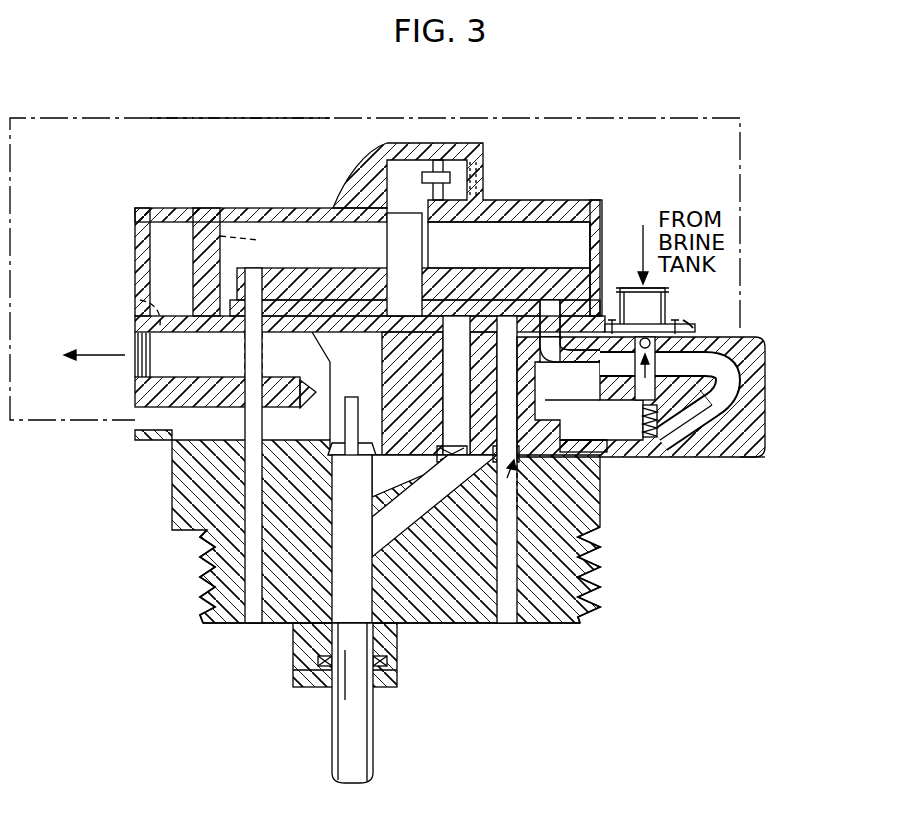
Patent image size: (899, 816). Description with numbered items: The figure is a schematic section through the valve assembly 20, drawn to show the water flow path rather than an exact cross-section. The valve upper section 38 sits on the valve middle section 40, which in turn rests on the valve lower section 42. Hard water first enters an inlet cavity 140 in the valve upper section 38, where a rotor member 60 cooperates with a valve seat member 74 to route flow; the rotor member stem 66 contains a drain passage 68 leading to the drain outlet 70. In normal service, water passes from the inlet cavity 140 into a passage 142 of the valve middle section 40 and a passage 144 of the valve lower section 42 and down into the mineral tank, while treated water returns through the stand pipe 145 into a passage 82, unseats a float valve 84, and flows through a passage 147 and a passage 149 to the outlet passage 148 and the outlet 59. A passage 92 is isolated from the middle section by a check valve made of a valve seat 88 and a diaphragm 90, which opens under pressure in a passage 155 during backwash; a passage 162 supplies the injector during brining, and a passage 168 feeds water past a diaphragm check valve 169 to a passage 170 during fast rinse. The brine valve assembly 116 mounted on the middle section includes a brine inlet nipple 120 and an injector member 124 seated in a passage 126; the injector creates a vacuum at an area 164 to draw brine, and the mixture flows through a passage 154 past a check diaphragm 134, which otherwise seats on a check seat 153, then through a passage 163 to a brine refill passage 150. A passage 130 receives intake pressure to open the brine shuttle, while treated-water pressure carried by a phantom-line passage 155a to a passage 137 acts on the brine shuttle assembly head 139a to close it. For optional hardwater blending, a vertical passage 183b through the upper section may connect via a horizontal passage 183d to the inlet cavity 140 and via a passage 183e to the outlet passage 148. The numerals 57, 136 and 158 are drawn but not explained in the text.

The valve assembly 20 is at (620, 115).
The passage 155a is at (232, 118).
The valve upper section 38 is at (126, 241).
The vertical passage 183b is at (185, 210).
The horizontal passage 183d is at (264, 237).
The passage 183e is at (140, 300).
The rotor member 60 is at (578, 214).
The drain outlet 70 is at (476, 190).
The inlet cavity 140 is at (560, 236).
The passage 130 is at (601, 266).
The valve seat member 74 is at (468, 290).
The rotor member stem 66 is at (430, 243).
The drain passage 68 is at (392, 246).
The passage 162 is at (578, 300).
The valve middle section 40 is at (122, 332).
The outlet 59 is at (138, 373).
The passage 142 is at (250, 392).
The outlet passage 148 is at (297, 366).
The valve lower section 42 is at (136, 540).
The passage 144 is at (225, 535).
The diaphragm check valve 169 is at (580, 545).
The bottom face 158 is at (418, 623).
The passage 155 is at (452, 362).
The passage 149 is at (320, 356).
The passage 147 is at (340, 391).
The valve seat 88 is at (446, 440).
The diaphragm 90 is at (438, 466).
The passage 92 is at (400, 526).
The float valve 84 is at (340, 470).
The passage 170 is at (508, 623).
The retaining nut 57 is at (398, 668).
The passage 82 is at (330, 615).
The stand pipe 145 is at (375, 739).
The brine valve assembly 116 is at (784, 337).
The passage 168 is at (522, 378).
The passage 126 is at (546, 426).
The passage 163 is at (580, 433).
The injector member 124 is at (772, 372).
The passage 154 is at (770, 400).
The check diaphragm 134 is at (632, 445).
The valve plunger 136 is at (614, 455).
The brine refill passage 150 is at (566, 455).
The check seat 153 is at (690, 452).
The area 164 is at (760, 450).
The brine inlet nipple 120 is at (668, 298).
The passage 137 is at (700, 326).
The brine shuttle assembly head 139a is at (693, 328).